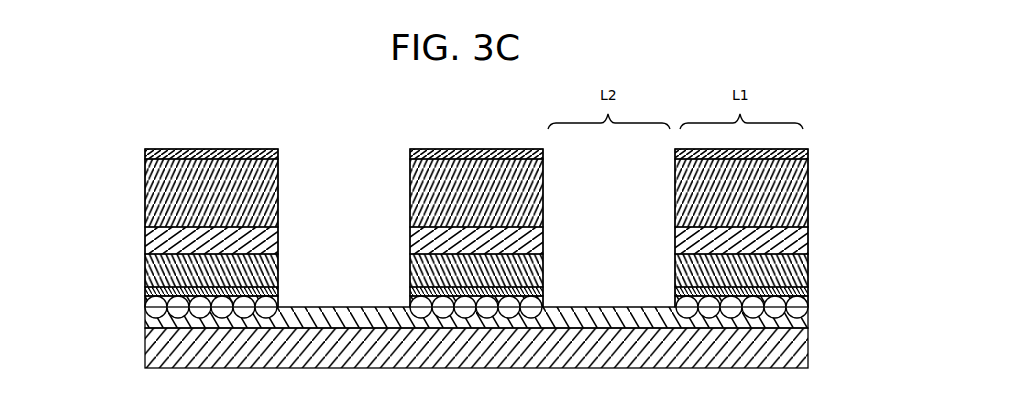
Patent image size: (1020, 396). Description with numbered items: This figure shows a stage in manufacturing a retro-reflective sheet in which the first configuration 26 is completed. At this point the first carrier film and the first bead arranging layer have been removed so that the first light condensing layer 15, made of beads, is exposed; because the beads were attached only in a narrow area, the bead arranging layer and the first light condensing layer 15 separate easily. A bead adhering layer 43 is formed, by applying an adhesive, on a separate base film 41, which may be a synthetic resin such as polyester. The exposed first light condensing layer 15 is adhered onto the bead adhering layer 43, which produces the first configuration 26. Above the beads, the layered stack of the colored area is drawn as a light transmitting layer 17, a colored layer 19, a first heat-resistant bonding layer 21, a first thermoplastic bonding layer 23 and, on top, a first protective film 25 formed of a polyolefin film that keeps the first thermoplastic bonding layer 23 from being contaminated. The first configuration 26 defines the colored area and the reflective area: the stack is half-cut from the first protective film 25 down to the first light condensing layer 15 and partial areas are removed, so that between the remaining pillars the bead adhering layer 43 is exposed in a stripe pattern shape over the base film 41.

The first light condensing layer 15 is at (145, 310).
The light transmitting layer 17 is at (145, 291).
The colored layer 19 is at (145, 261).
The first heat-resistant bonding layer 21 is at (145, 235).
The first thermoplastic bonding layer 23 is at (145, 181).
The first protective film 25 is at (195, 149).
The first configuration 26 is at (836, 140).
The base film 41 is at (802, 352).
The bead adhering layer 43 is at (808, 312).